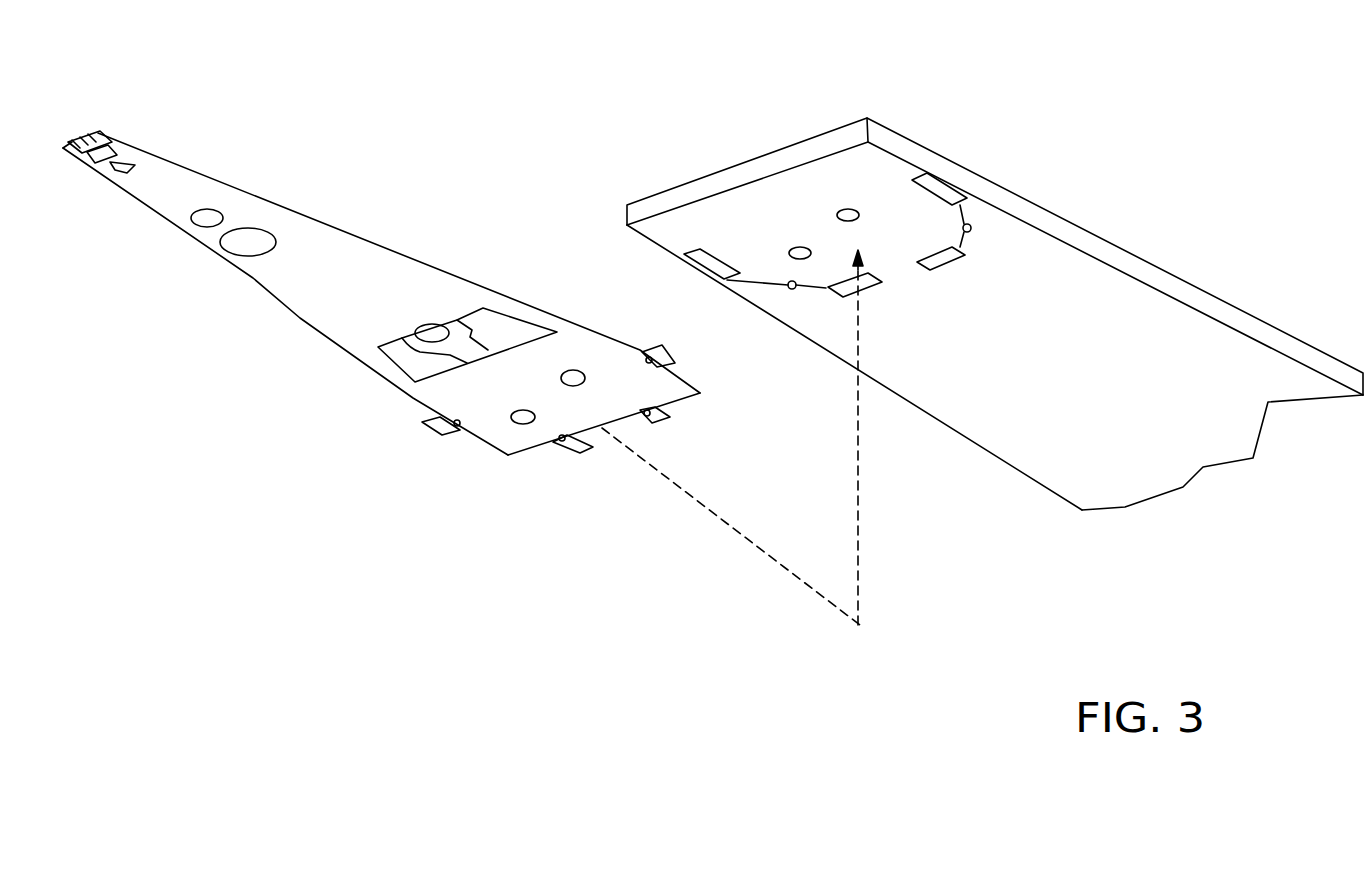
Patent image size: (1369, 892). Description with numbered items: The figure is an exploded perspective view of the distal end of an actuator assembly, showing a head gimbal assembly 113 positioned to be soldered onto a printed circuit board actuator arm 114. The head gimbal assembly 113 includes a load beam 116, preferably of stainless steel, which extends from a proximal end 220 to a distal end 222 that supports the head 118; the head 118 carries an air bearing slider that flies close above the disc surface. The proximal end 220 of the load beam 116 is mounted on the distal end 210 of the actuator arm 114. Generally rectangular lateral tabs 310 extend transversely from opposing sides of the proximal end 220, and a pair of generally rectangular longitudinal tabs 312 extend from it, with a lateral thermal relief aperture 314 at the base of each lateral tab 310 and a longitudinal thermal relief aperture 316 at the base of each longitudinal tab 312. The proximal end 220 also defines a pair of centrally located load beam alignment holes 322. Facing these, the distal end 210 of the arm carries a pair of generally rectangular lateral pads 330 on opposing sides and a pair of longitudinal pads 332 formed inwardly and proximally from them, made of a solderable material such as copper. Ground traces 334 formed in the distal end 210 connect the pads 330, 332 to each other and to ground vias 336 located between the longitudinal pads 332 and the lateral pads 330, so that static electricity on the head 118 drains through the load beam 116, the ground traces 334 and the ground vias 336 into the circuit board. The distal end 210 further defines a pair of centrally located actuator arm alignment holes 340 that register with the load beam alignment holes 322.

The head gimbal assembly 113 is at (421, 310).
The actuator arm 114 is at (1122, 150).
The load beam 116 is at (330, 192).
The head 118 is at (120, 134).
The distal end of the actuator arm 210 is at (847, 340).
The proximal end of the load beam 220 is at (580, 345).
The distal end of the load beam 222 is at (168, 206).
The lateral tab 310 is at (664, 352).
The longitudinal tab 312 is at (582, 455).
The lateral thermal relief aperture 314 is at (650, 353).
The longitudinal thermal relief aperture 316 is at (568, 453).
The load beam alignment hole 322 is at (562, 378).
The lateral pad 330 is at (720, 273).
The longitudinal pad 332 is at (947, 265).
The ground trace 334 is at (983, 342).
The ground via 336 is at (788, 283).
The actuator arm alignment hole 340 is at (846, 212).